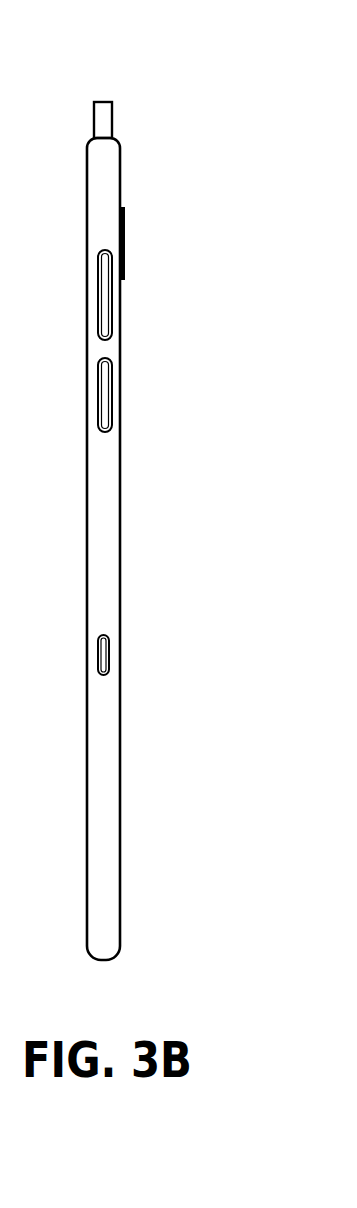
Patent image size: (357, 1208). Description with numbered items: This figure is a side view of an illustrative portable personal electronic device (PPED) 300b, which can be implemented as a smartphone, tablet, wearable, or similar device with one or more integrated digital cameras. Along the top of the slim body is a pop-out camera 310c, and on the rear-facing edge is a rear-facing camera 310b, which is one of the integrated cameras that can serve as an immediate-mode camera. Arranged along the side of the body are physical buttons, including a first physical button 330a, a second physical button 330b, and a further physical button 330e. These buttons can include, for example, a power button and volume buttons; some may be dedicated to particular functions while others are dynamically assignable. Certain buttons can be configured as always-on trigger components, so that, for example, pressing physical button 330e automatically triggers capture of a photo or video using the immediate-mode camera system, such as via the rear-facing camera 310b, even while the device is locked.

The portable personal electronic device 300b is at (159, 487).
The pop-out camera 310c is at (113, 118).
The rear-facing camera 310b is at (126, 243).
The physical button 330a is at (112, 310).
The physical button 330b is at (112, 400).
The physical button 330e is at (110, 662).